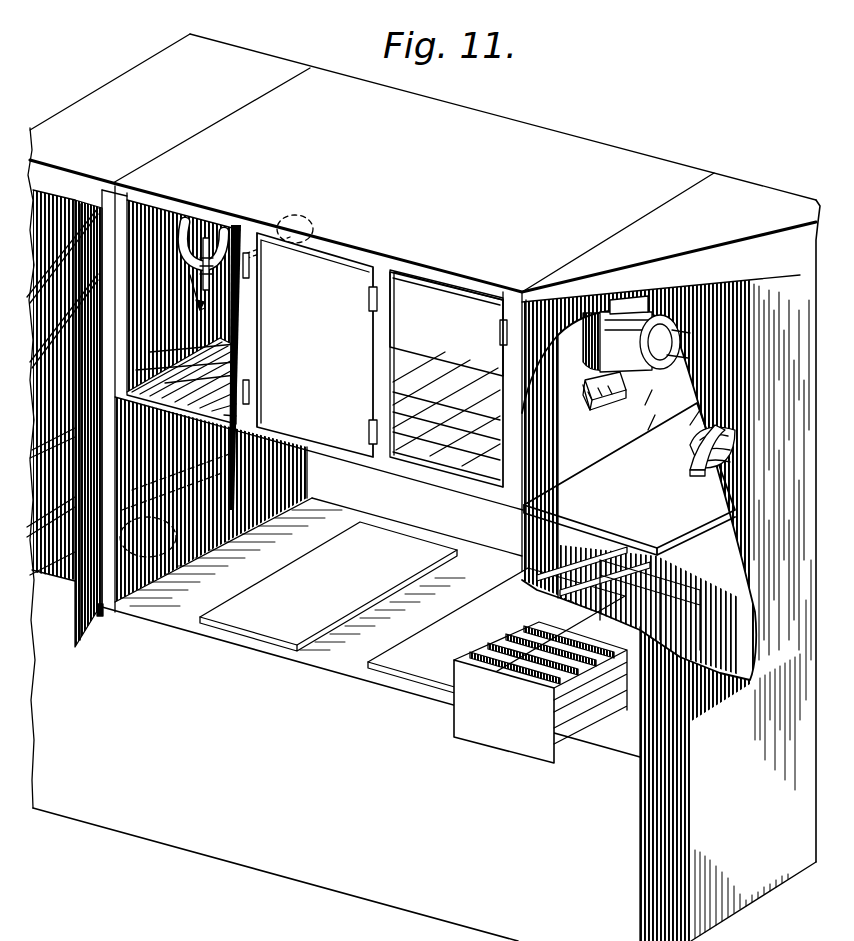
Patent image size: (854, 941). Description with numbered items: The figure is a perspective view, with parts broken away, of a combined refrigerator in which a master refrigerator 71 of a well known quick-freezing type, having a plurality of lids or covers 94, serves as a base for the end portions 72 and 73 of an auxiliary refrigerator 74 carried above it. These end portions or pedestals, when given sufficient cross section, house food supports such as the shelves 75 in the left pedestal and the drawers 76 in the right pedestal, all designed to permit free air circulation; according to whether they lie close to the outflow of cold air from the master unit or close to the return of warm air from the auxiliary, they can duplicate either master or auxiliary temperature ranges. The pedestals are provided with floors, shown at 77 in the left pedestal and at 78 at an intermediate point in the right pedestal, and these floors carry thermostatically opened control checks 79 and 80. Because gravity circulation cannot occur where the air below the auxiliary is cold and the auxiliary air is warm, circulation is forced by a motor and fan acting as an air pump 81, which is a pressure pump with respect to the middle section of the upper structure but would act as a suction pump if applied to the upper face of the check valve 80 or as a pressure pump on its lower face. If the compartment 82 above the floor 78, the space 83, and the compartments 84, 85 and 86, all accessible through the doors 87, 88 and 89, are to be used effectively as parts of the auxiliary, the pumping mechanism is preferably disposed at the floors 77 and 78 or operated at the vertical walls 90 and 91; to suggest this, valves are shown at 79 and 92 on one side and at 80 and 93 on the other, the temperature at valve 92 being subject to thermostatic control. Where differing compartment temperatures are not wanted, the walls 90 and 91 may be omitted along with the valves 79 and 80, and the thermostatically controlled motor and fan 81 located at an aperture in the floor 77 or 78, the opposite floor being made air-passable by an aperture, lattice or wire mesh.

The master refrigerator 71 is at (338, 730).
The end portion 72 is at (166, 125).
The end portion 73 is at (669, 610).
The auxiliary refrigerator 74 is at (424, 184).
The shelves 75 is at (33, 448).
The drawers 76 is at (596, 730).
The floor 77 is at (66, 580).
The floor 78 is at (608, 504).
The thermostatically opened control check 79 is at (177, 578).
The thermostatically opened control check 80 is at (700, 472).
The air pump 81 is at (672, 330).
The compartment 82 is at (565, 407).
The space 83 is at (48, 197).
The compartment 84 is at (182, 296).
The compartment 85 is at (315, 345).
The compartment 86 is at (443, 452).
The door 87 is at (537, 318).
The door 88 is at (92, 628).
The door 89 is at (247, 345).
The vertical wall 90 is at (190, 208).
The vertical wall 91 is at (541, 463).
The valve 92 is at (213, 230).
The valve 93 is at (602, 313).
The lids or covers 94 is at (455, 627).